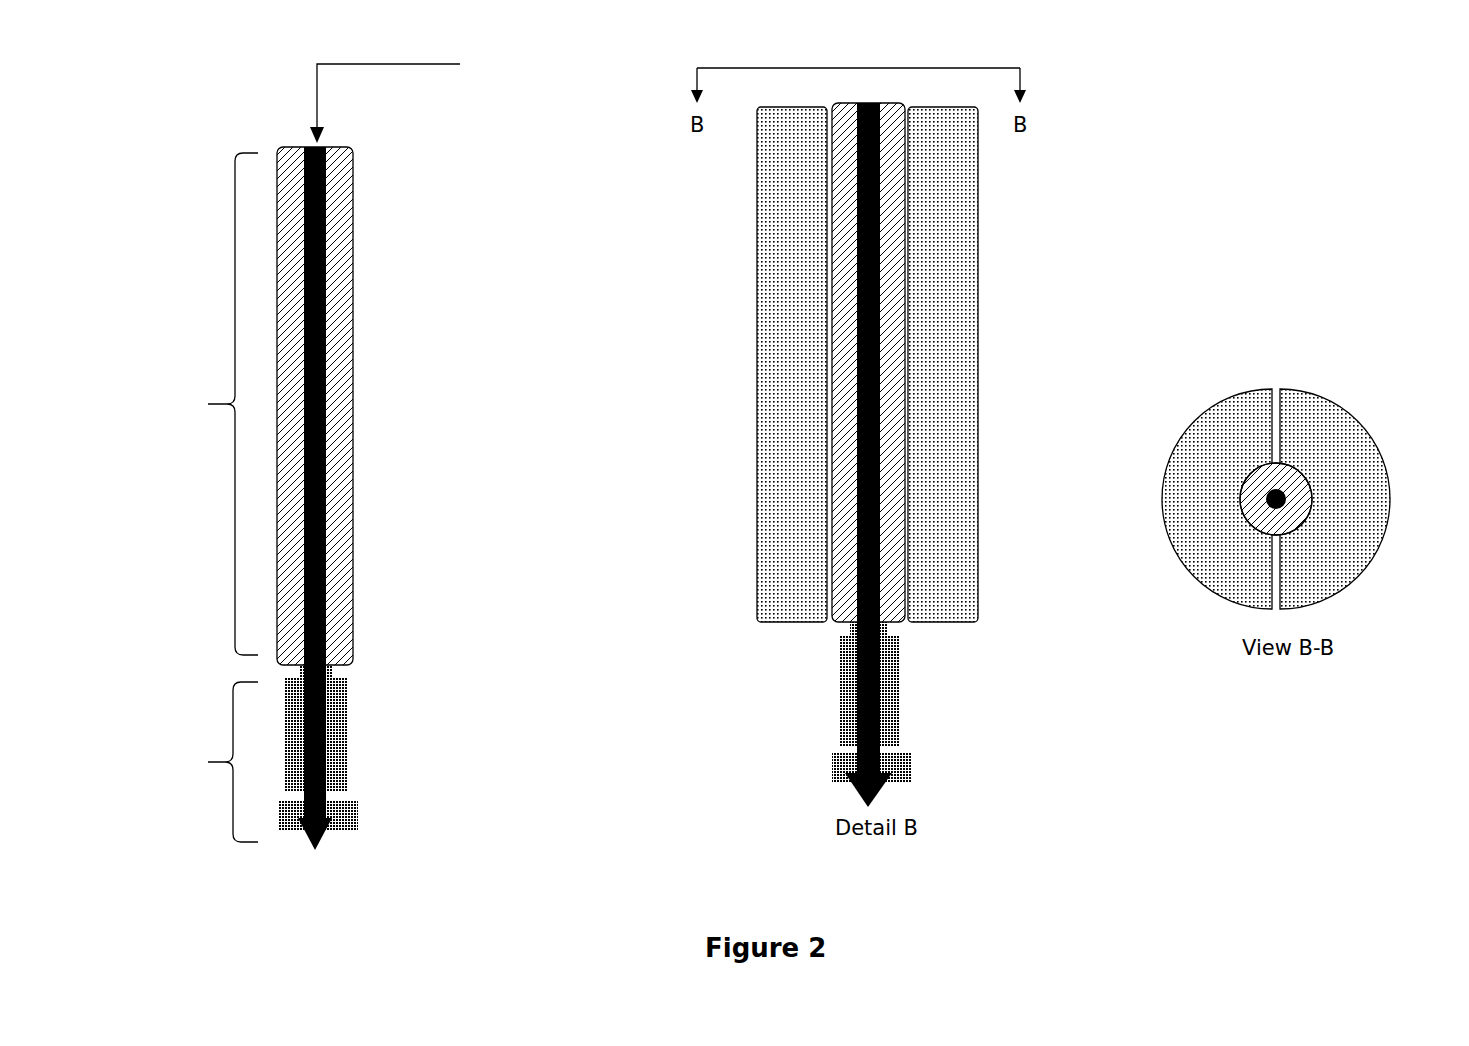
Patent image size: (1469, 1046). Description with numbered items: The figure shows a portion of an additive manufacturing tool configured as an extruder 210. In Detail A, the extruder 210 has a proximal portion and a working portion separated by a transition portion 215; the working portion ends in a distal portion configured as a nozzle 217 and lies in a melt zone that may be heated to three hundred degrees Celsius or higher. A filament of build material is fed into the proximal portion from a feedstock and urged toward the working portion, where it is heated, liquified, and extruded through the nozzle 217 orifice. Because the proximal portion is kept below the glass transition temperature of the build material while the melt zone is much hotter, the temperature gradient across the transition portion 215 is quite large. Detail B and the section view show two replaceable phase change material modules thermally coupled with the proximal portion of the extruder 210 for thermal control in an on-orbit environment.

The extruder 210 is at (262, 130).
The transition portion 215 is at (365, 659).
The nozzle 217 is at (875, 800).